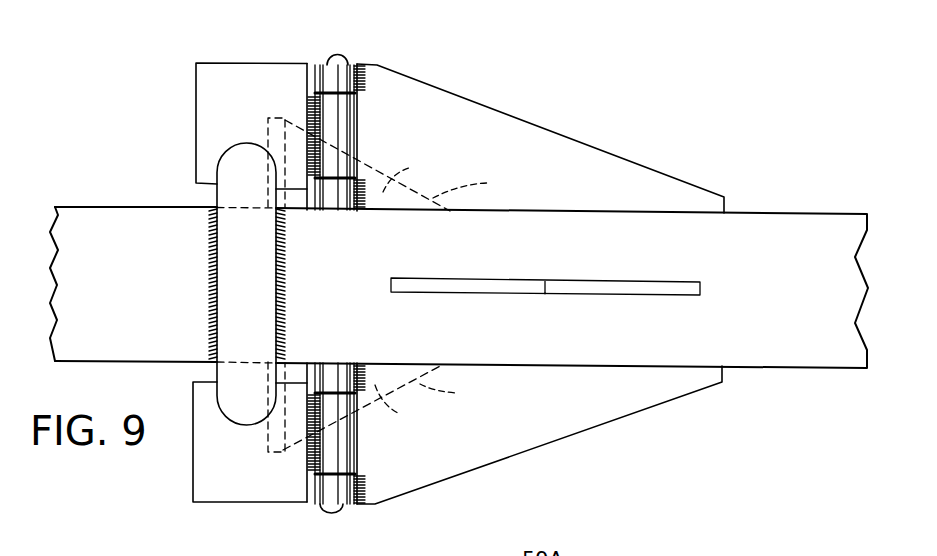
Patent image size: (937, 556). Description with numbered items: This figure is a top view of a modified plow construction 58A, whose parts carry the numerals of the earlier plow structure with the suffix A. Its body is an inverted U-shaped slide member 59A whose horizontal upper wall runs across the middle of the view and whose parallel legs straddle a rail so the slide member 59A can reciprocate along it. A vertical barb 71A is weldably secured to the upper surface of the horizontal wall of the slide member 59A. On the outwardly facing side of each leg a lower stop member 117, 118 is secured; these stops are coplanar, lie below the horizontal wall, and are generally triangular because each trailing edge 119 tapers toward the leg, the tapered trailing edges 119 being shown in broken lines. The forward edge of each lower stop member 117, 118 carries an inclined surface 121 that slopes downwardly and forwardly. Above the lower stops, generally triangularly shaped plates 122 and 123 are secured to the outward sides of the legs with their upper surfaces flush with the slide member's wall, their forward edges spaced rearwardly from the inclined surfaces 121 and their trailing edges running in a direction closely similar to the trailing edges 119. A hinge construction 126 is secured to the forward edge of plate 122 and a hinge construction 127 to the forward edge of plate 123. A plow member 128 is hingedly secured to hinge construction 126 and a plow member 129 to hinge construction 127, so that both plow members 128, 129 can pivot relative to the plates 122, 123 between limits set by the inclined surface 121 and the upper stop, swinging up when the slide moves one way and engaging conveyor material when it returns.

The modified plow construction 58A is at (668, 142).
The slide member 59A is at (768, 212).
The vertical barb 71A is at (577, 287).
The lower stop member 117 is at (393, 410).
The lower stop member 118 is at (408, 168).
The trailing edge 119 is at (487, 183).
The inclined surface 121 is at (277, 142).
The triangularly shaped plate 122 is at (577, 420).
The triangularly shaped plate 123 is at (563, 155).
The hinge construction 126 is at (318, 507).
The hinge construction 127 is at (349, 51).
The plow member 128 is at (205, 485).
The plow member 129 is at (217, 80).